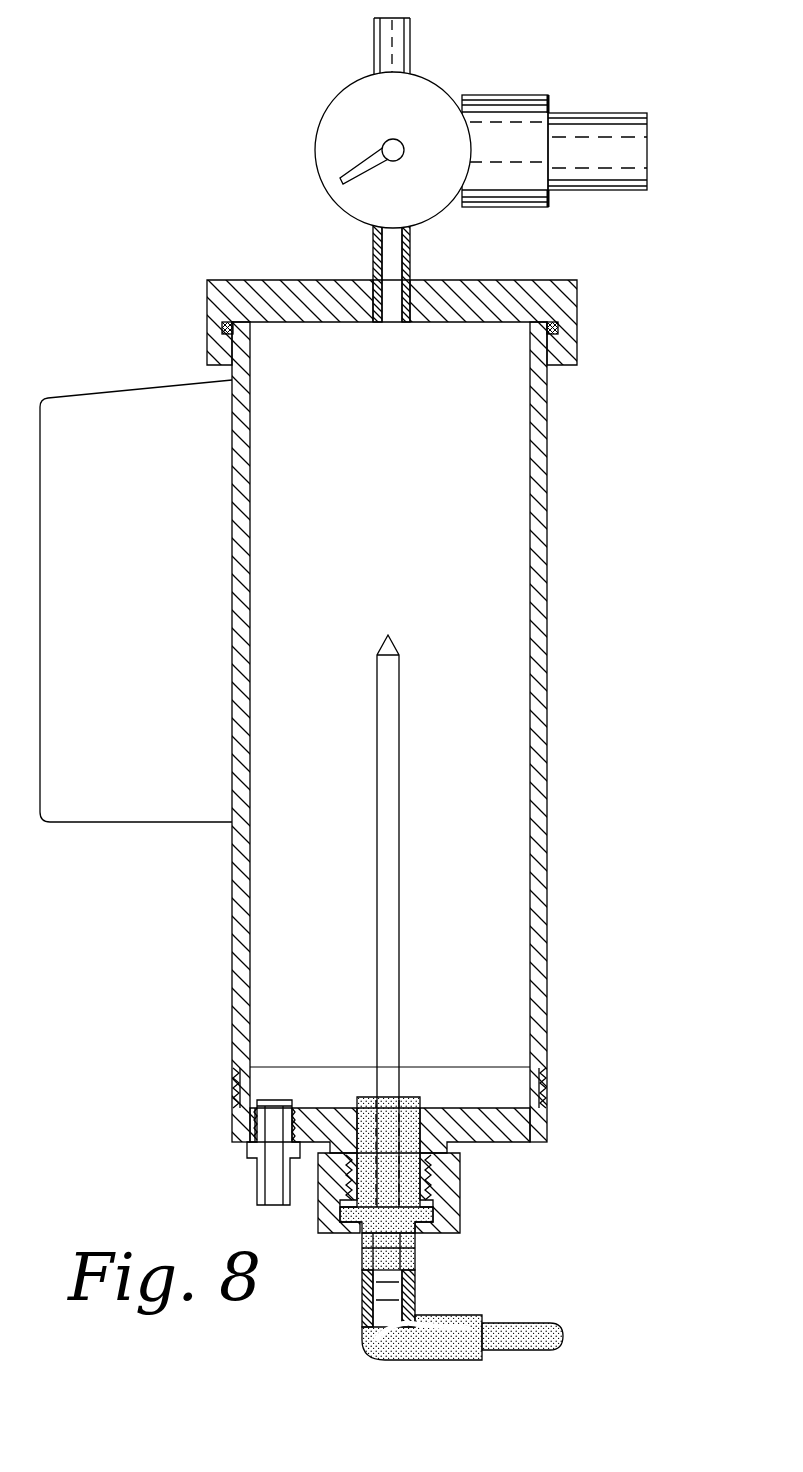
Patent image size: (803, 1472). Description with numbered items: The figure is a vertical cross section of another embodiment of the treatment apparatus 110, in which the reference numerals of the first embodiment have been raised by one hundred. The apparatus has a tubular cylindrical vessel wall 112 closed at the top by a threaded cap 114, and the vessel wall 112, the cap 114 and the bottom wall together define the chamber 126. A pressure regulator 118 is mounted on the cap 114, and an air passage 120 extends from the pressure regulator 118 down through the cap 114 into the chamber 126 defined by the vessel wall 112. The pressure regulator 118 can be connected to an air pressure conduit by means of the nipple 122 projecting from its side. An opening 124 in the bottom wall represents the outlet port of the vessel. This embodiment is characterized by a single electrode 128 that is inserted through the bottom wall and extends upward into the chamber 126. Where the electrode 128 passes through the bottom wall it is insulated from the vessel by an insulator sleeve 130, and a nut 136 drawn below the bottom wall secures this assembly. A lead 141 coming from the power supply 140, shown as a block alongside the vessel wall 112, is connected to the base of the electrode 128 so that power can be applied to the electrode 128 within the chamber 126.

The treatment apparatus 110 is at (643, 368).
The vessel wall 112 is at (548, 625).
The cap 114 is at (512, 280).
The pressure regulator 118 is at (328, 106).
The air passage 120 is at (385, 252).
The nipple 122 is at (600, 122).
The opening 124 is at (278, 1100).
The chamber 126 is at (518, 848).
The electrode 128 is at (385, 974).
The insulator sleeve 130 is at (418, 1098).
The retaining nut 136 is at (462, 1196).
The power supply 140 is at (97, 782).
The lead 141 is at (520, 1332).